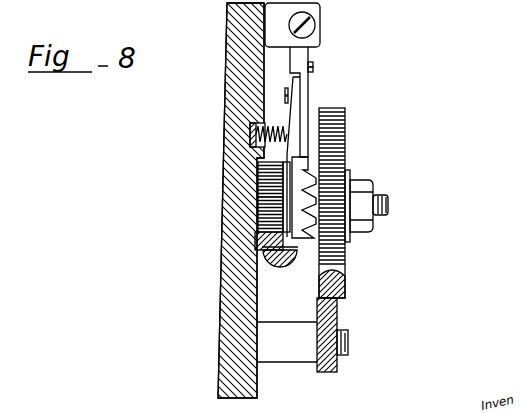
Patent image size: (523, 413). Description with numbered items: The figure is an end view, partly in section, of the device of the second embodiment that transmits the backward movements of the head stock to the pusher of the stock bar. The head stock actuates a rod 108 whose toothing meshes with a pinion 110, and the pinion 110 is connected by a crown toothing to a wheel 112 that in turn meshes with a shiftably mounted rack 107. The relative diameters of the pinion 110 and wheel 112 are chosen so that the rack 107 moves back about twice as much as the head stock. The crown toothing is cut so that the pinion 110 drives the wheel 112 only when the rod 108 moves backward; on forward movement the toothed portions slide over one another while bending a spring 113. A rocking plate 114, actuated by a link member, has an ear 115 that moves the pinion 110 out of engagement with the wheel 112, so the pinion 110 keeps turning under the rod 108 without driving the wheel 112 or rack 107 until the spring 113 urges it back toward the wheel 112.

The rack 107 is at (322, 318).
The rod 108 is at (265, 257).
The pinion 110 is at (265, 212).
The wheel 112 is at (333, 142).
The spring 113 is at (250, 138).
The rocking plate 114 is at (305, 92).
The ear 115 is at (265, 187).